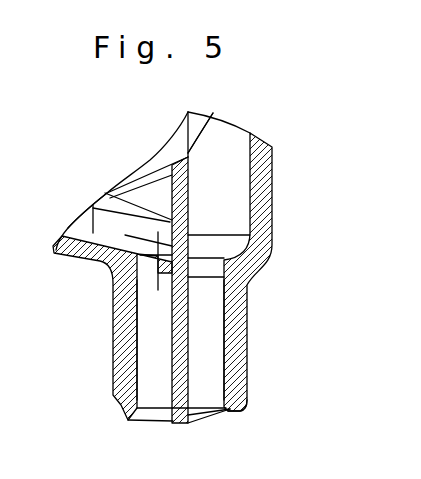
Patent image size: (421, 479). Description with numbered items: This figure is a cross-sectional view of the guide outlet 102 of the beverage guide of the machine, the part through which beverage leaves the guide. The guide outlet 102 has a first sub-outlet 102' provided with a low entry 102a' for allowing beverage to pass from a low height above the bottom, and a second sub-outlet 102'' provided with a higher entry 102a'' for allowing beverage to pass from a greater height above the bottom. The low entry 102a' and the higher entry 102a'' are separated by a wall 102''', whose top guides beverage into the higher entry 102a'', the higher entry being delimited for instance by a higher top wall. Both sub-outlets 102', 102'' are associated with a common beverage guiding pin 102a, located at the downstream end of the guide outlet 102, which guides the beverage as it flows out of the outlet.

The guide outlet 102 is at (162, 268).
The beverage guiding pin 102a is at (259, 395).
The first sub-outlet 102' is at (118, 340).
The second sub-outlet 102'' is at (249, 340).
The wall 102''' is at (61, 197).
The low entry 102a' is at (204, 115).
The higher entry 102a'' is at (89, 224).